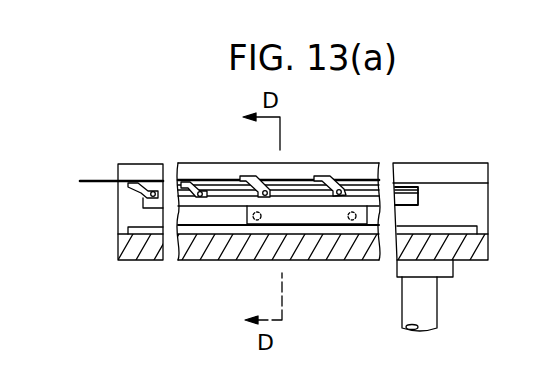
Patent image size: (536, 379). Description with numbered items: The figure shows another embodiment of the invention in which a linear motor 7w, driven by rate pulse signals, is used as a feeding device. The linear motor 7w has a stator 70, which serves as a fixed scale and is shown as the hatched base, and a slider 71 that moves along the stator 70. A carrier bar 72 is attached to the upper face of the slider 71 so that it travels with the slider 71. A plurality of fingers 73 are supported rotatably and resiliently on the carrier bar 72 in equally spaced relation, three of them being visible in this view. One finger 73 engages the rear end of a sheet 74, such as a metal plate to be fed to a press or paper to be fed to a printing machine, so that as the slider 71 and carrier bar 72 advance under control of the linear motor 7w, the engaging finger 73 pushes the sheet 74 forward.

The stator 70 is at (331, 240).
The slider 71 is at (302, 217).
The carrier bar 72 is at (363, 204).
The fingers 73 is at (262, 177).
The sheet 74 is at (206, 180).
The linear motor 7w is at (247, 246).